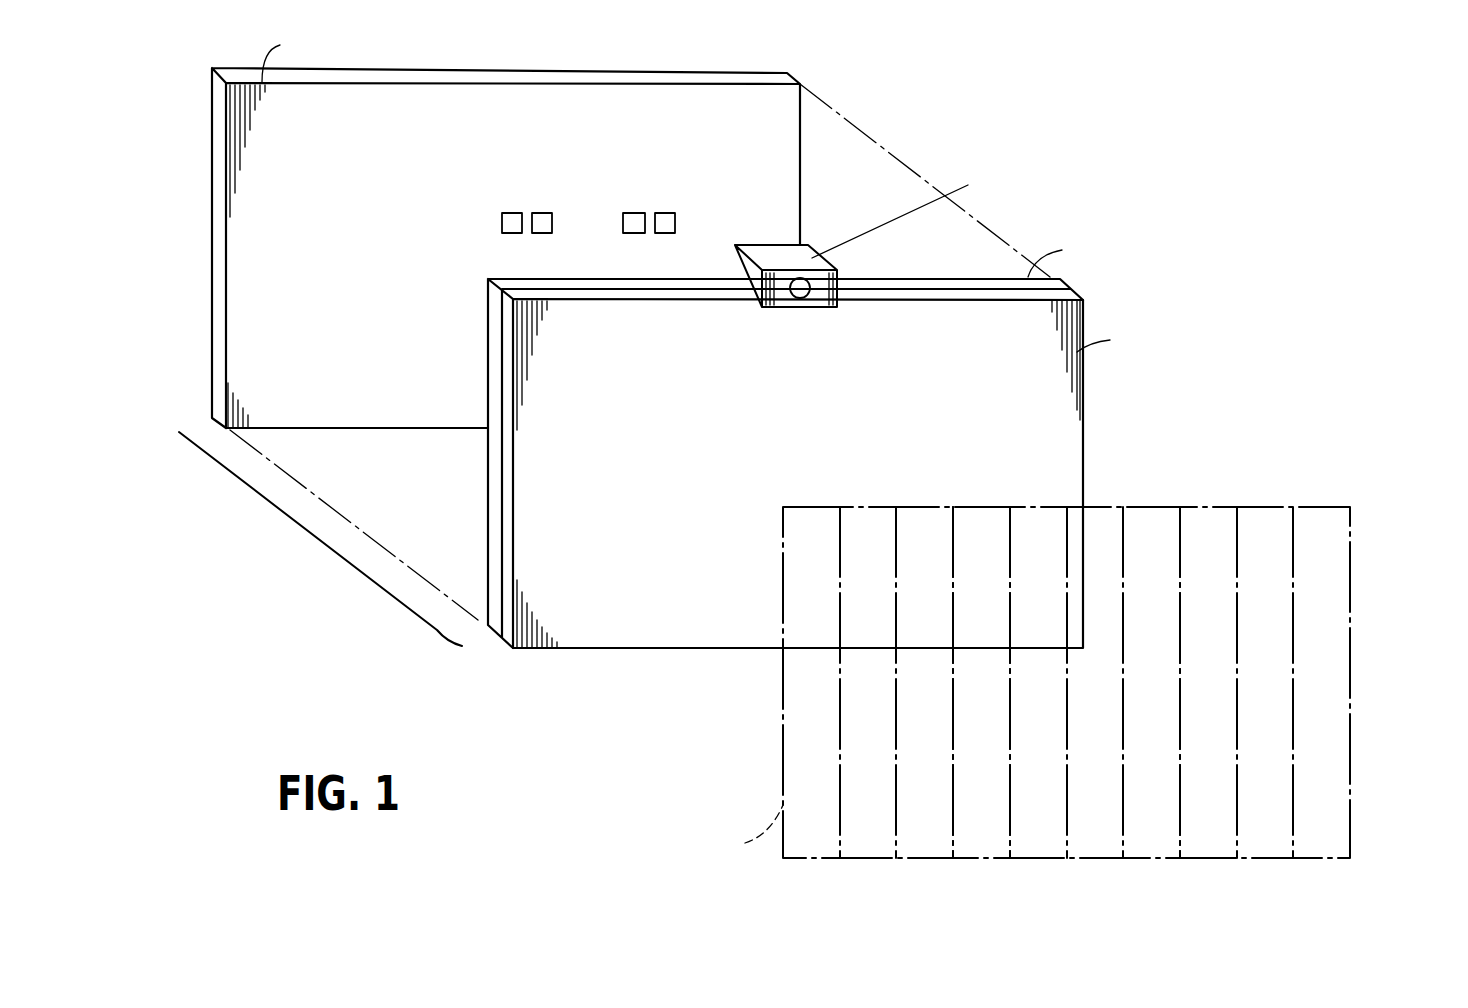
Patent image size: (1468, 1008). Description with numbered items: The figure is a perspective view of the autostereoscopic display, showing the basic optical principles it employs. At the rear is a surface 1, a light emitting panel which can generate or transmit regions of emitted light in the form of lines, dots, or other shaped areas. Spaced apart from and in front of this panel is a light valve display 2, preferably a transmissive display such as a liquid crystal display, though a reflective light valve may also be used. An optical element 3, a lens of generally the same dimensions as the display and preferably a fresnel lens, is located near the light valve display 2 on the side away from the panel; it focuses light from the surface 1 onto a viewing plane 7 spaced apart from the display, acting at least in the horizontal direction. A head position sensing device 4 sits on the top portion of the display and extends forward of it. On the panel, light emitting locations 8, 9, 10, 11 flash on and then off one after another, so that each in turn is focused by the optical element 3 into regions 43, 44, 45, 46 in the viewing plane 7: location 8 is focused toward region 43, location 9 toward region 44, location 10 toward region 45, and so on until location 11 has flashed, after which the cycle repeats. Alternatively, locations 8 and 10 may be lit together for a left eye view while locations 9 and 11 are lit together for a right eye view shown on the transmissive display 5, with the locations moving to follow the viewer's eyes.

The surface 1 is at (212, 237).
The light valve display 2 is at (1068, 432).
The optical element 3 is at (487, 476).
The head position sensing device 4 is at (815, 258).
The transmissive display 5 is at (288, 528).
The viewing plane 7 is at (783, 748).
The light emitting location 8 is at (501, 213).
The light emitting location 9 is at (543, 213).
The light emitting location 10 is at (630, 213).
The light emitting location 11 is at (668, 213).
The region 43 is at (1207, 823).
The region 44 is at (1138, 845).
The region 45 is at (977, 820).
The region 46 is at (927, 845).